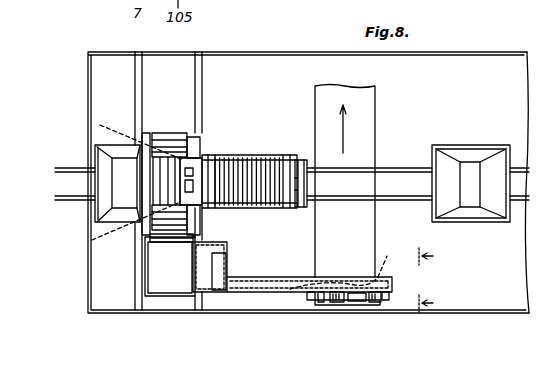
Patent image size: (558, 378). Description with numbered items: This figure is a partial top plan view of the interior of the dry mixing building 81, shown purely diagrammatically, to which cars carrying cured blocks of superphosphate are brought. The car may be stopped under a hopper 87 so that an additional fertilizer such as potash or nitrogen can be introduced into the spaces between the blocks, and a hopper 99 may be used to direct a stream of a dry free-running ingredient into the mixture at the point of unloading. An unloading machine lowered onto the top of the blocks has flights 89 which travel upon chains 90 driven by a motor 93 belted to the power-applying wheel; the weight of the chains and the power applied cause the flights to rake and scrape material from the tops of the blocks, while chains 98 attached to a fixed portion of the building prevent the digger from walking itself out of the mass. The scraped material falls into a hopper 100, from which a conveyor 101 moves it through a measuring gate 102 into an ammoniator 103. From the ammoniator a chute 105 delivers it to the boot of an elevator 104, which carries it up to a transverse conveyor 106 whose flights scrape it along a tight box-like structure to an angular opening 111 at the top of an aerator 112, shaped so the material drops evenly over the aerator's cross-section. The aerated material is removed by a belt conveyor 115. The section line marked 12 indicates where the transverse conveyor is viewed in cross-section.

The dry mixing building 81 is at (513, 57).
The hopper 87 is at (477, 145).
The flights 89 is at (249, 156).
The chains 90 is at (306, 160).
The motor 93 is at (198, 160).
The chains 98 is at (100, 125).
The hopper 99 is at (100, 153).
The hopper 100 is at (193, 137).
The conveyor 101 is at (222, 224).
The measuring gate 102 is at (168, 240).
The ammoniator 103 is at (157, 280).
The elevator 104 is at (228, 260).
The chute 105 is at (208, 248).
The transverse conveyor 106 is at (275, 276).
The angular opening 111 is at (352, 265).
The aerator 112 is at (363, 303).
The belt conveyor 115 is at (368, 104).
The section line 12 is at (434, 280).